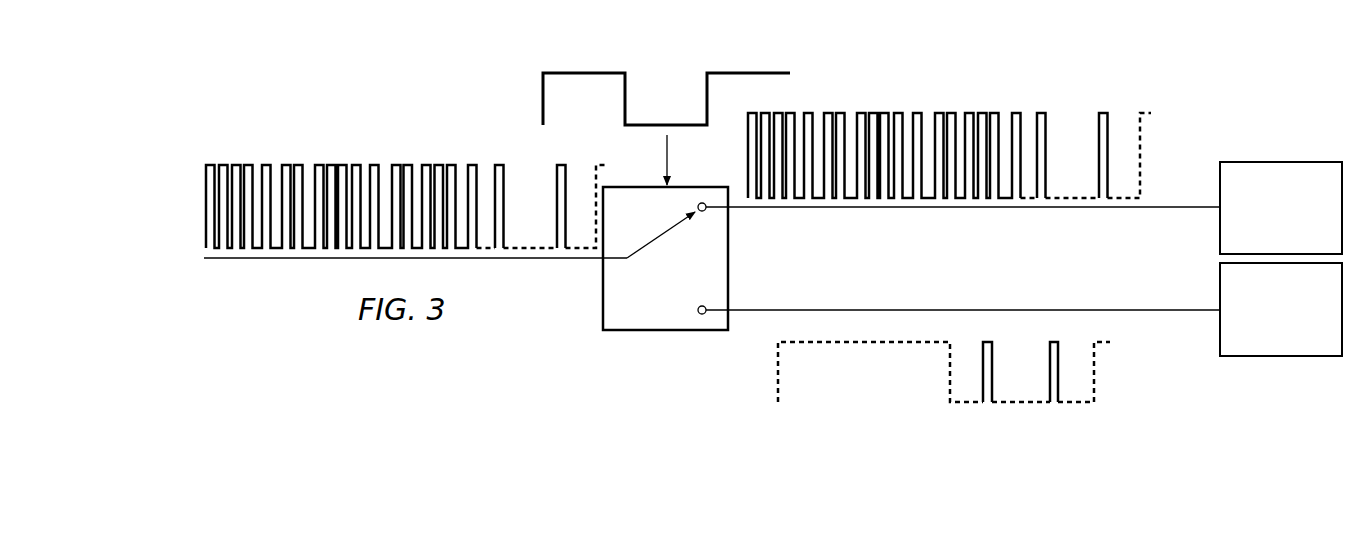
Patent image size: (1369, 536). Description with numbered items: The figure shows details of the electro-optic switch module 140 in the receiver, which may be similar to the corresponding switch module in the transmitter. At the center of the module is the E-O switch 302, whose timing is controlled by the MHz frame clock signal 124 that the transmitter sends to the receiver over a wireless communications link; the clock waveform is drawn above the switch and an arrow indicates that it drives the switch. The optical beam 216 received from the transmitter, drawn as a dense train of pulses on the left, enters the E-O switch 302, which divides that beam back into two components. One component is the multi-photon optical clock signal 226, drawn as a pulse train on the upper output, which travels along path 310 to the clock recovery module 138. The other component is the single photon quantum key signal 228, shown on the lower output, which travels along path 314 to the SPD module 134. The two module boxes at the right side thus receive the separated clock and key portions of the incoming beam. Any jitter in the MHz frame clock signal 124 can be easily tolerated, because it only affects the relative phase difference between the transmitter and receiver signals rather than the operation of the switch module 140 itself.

The MHz frame clock signal 124 is at (543, 107).
The SPD module 134 is at (1290, 357).
The clock recovery module 138 is at (1289, 161).
The electro-optic switch module 140 is at (949, 111).
The optical beam 216 is at (341, 164).
The multi-photon optical clock signal 226 is at (840, 112).
The single photon quantum key signal 228 is at (752, 373).
The E-O switch 302 is at (648, 333).
The path 310 is at (772, 210).
The path 314 is at (960, 308).